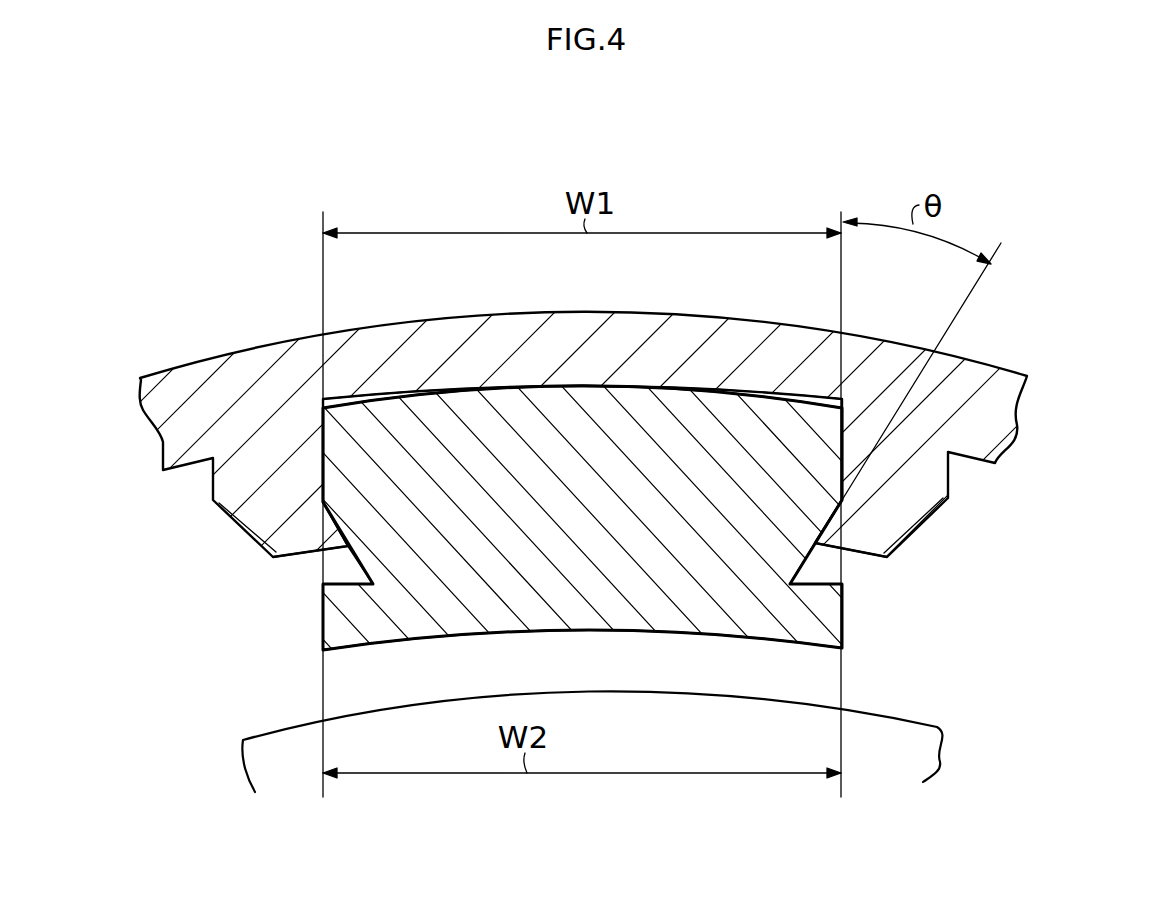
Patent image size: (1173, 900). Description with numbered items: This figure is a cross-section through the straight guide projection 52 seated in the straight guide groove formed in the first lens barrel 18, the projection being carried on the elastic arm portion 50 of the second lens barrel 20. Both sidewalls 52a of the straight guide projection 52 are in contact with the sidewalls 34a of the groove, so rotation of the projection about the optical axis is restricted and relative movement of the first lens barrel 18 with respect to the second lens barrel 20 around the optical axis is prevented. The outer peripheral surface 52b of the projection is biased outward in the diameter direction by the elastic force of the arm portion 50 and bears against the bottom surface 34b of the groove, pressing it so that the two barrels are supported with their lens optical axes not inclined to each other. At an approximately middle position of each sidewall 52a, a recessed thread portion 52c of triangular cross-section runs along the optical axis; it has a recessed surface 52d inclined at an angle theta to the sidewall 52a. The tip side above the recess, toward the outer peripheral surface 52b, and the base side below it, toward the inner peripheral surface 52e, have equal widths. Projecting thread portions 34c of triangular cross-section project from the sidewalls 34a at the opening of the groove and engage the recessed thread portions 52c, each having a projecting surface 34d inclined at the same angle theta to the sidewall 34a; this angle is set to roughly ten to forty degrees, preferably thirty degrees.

The first lens barrel 18 is at (212, 388).
The second lens barrel 20 is at (896, 728).
The sidewall of the straight guide groove 34a is at (327, 462).
The bottom surface of the straight guide groove 34b is at (403, 404).
The projecting thread portion 34c is at (337, 541).
The projecting surface 34d is at (348, 541).
The arm portion 50 is at (626, 660).
The straight guide projection 52 is at (596, 428).
The sidewall of the straight guide projection 52a is at (843, 467).
The outer peripheral surface 52b is at (732, 397).
The recessed thread portion 52c is at (327, 572).
The recessed surface 52d is at (366, 580).
The inner peripheral surface 52e is at (682, 637).